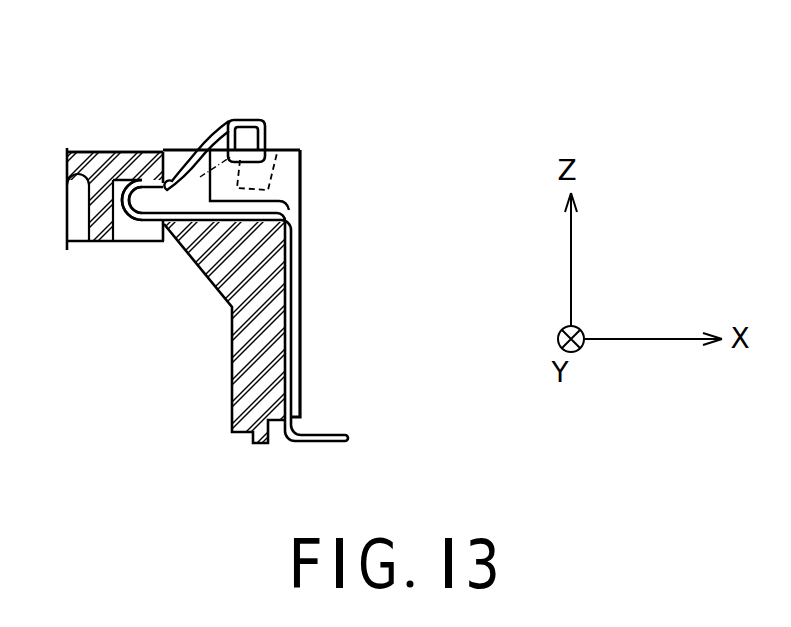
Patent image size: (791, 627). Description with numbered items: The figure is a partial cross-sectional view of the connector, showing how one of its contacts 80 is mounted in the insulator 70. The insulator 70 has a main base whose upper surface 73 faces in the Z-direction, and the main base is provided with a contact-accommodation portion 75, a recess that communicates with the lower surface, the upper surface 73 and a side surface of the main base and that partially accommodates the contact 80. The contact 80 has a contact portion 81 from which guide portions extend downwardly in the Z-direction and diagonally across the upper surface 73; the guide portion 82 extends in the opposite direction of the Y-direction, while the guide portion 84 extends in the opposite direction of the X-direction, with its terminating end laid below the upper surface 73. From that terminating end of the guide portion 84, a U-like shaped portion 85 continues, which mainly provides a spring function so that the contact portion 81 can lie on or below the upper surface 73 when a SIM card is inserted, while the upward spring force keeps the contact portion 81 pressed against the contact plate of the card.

The insulator 70 is at (110, 138).
The upper surface 73 is at (130, 152).
The contact-accommodation portion 75 is at (160, 203).
The contact 80 is at (296, 261).
The contact portion 81 is at (232, 121).
The guide portion 82 is at (266, 141).
The guide portion 84 is at (203, 152).
The U-like shaped portion 85 is at (145, 241).